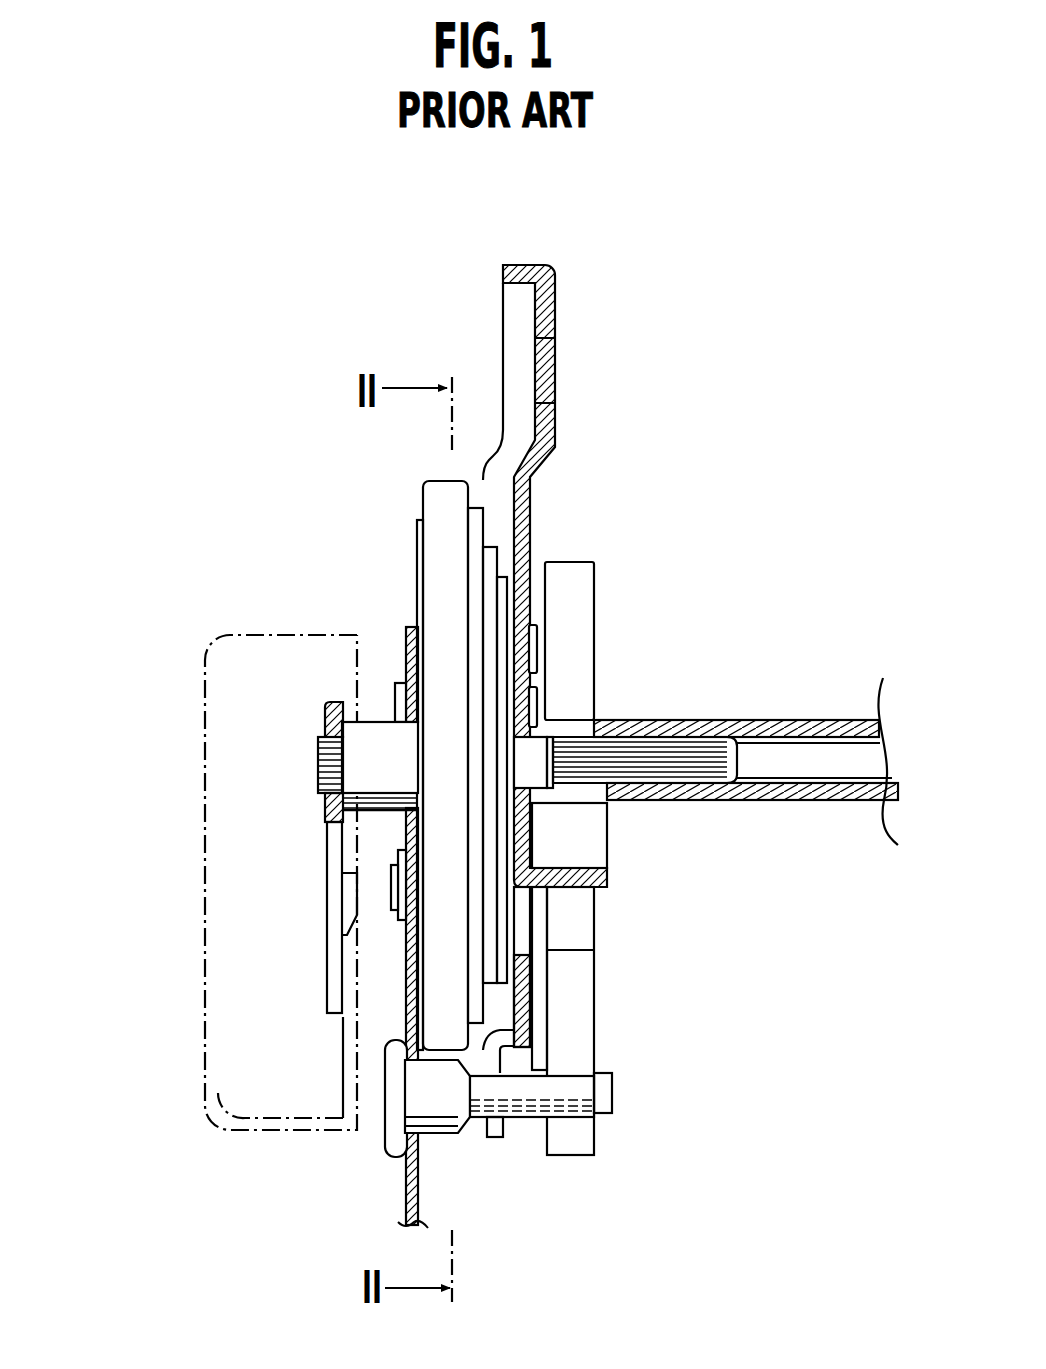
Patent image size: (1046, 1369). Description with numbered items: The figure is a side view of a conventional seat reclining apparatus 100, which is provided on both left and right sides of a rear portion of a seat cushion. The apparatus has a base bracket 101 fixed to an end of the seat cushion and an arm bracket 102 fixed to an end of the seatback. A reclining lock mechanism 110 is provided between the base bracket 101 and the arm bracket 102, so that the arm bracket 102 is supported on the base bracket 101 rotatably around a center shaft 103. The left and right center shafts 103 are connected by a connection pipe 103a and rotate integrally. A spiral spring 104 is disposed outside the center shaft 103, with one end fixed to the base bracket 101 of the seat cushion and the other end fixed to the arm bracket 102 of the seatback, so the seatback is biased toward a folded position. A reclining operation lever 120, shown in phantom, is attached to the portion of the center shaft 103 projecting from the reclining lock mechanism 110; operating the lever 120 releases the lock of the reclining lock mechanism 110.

The seat reclining apparatus 100 is at (200, 405).
The base bracket 101 is at (406, 1197).
The arm bracket 102 is at (562, 310).
The center shaft 103 is at (690, 786).
The connection pipe 103a is at (820, 800).
The spiral spring 104 is at (583, 597).
The reclining lock mechanism 110 is at (425, 510).
The reclining operation lever 120 is at (205, 1000).